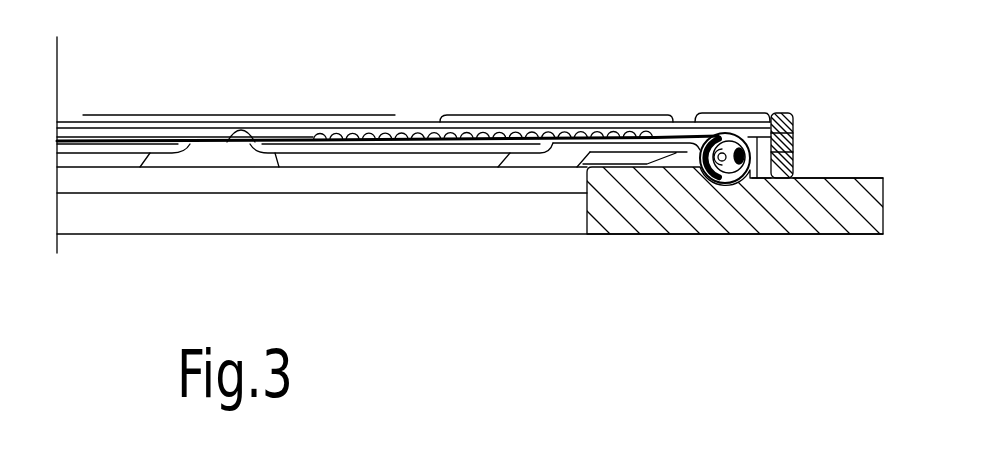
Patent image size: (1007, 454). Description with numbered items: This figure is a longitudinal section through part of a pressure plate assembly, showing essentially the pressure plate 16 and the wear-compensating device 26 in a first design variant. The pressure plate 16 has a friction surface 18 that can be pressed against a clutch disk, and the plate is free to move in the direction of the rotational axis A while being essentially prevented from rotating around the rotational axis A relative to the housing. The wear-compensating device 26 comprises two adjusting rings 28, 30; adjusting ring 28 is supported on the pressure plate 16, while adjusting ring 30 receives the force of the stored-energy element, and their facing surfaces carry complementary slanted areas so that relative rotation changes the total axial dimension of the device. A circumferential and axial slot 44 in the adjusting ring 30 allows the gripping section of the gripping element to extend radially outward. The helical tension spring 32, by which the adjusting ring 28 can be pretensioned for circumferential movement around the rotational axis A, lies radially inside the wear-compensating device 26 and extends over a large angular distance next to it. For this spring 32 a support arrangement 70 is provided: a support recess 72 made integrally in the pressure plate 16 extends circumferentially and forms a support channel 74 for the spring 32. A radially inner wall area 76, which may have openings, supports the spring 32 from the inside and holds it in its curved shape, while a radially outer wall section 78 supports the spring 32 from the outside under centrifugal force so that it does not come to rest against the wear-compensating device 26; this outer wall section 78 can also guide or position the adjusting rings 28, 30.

The rotational axis A is at (58, 45).
The pressure plate 16 is at (765, 213).
The friction surface 18 is at (847, 235).
The wear-compensating device 26 is at (803, 111).
The adjusting ring 28 is at (796, 168).
The adjusting ring 30 is at (781, 117).
The helical tension spring 32 is at (727, 138).
The circumferential and axial slot 44 is at (83, 115).
The support arrangement 70 is at (576, 104).
The support recess 72 is at (744, 133).
The support channel 74 is at (794, 138).
The radially inner wall area 76 is at (682, 168).
The radially outer wall section 78 is at (487, 128).